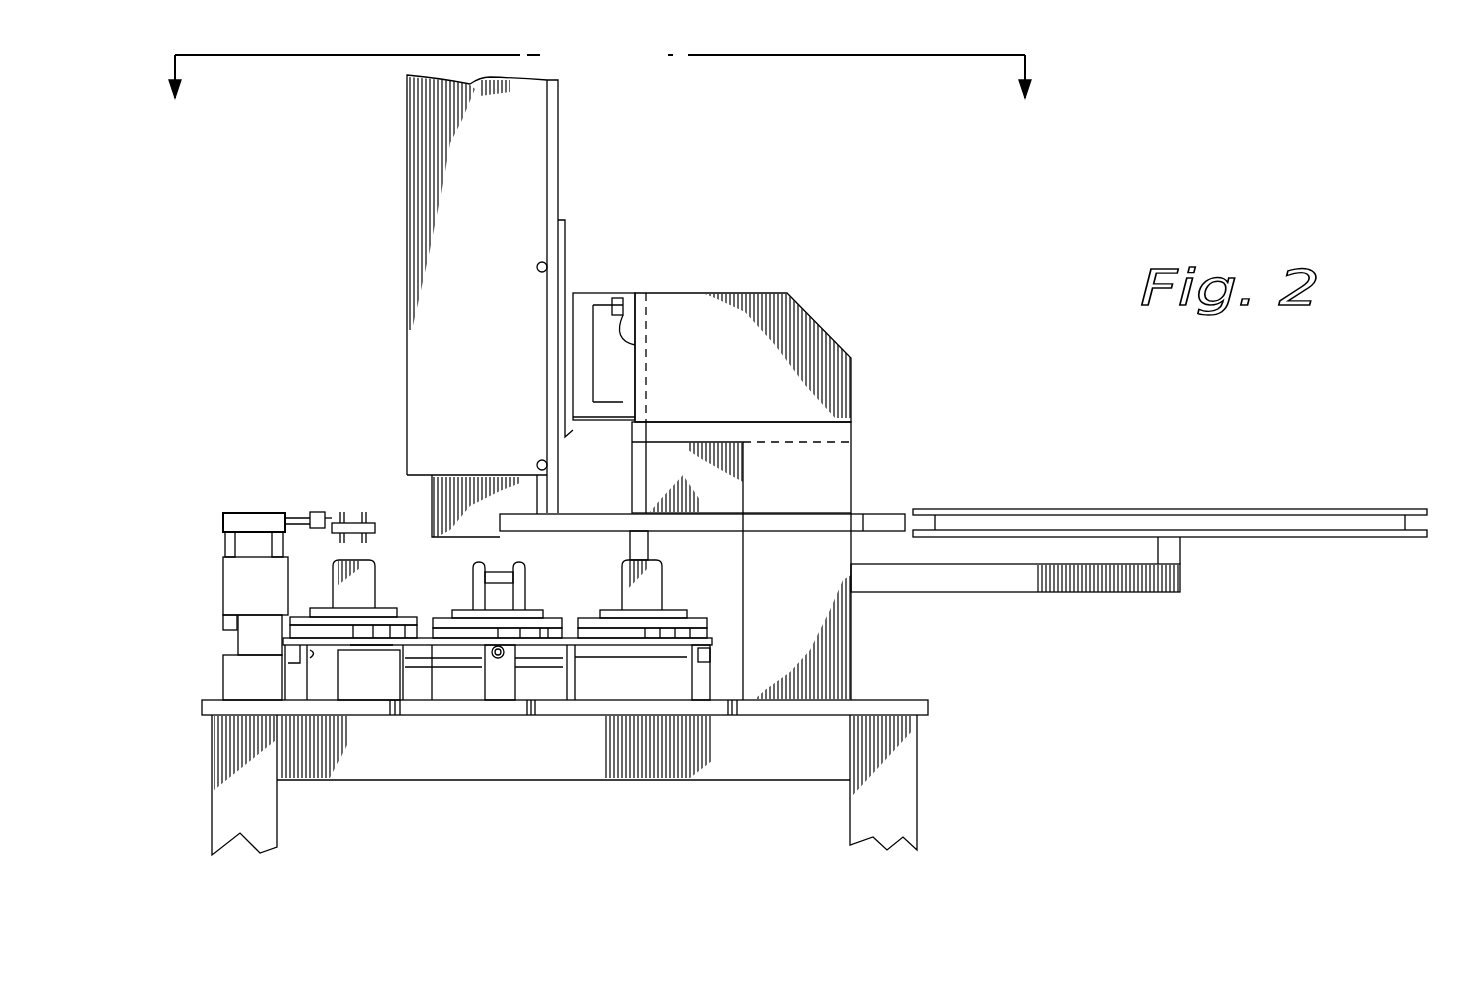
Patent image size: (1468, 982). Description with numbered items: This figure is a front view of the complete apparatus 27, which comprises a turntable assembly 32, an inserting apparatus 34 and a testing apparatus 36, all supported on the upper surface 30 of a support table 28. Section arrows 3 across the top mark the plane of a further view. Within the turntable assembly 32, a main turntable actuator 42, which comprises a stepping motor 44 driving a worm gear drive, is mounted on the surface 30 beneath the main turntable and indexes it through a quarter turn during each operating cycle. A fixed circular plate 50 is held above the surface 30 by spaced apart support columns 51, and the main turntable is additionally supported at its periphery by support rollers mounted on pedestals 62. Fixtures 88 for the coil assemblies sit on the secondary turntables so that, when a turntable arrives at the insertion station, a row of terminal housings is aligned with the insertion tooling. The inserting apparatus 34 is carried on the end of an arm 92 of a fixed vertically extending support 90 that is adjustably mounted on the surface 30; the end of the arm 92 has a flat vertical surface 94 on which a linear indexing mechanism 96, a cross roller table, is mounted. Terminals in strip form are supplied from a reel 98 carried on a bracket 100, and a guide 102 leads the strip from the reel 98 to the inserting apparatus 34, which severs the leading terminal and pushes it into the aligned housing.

The section line 3- 3 is at (604, 97).
The placement head assembly 27 is at (905, 286).
The support table 28 is at (923, 745).
The upper surface 30 is at (883, 690).
The turntable assembly 32 is at (712, 618).
The inserting apparatus 34 is at (403, 138).
The testing apparatus 36 is at (220, 527).
The main turntable actuator 42 is at (455, 695).
The stepping motor 44 is at (367, 683).
The fixed circular plate 50 is at (595, 650).
The support columns 51 is at (567, 681).
The pedestals 62 is at (297, 679).
The fixture 88 is at (475, 597).
The fixed vertically extending support 90 is at (841, 453).
The arm 92 is at (690, 292).
The flat vertical surface 94 is at (614, 306).
The linear indexing mechanism 96 is at (590, 297).
The reel 98 is at (1233, 510).
The bracket 100 is at (1110, 592).
The guide 102 is at (842, 522).